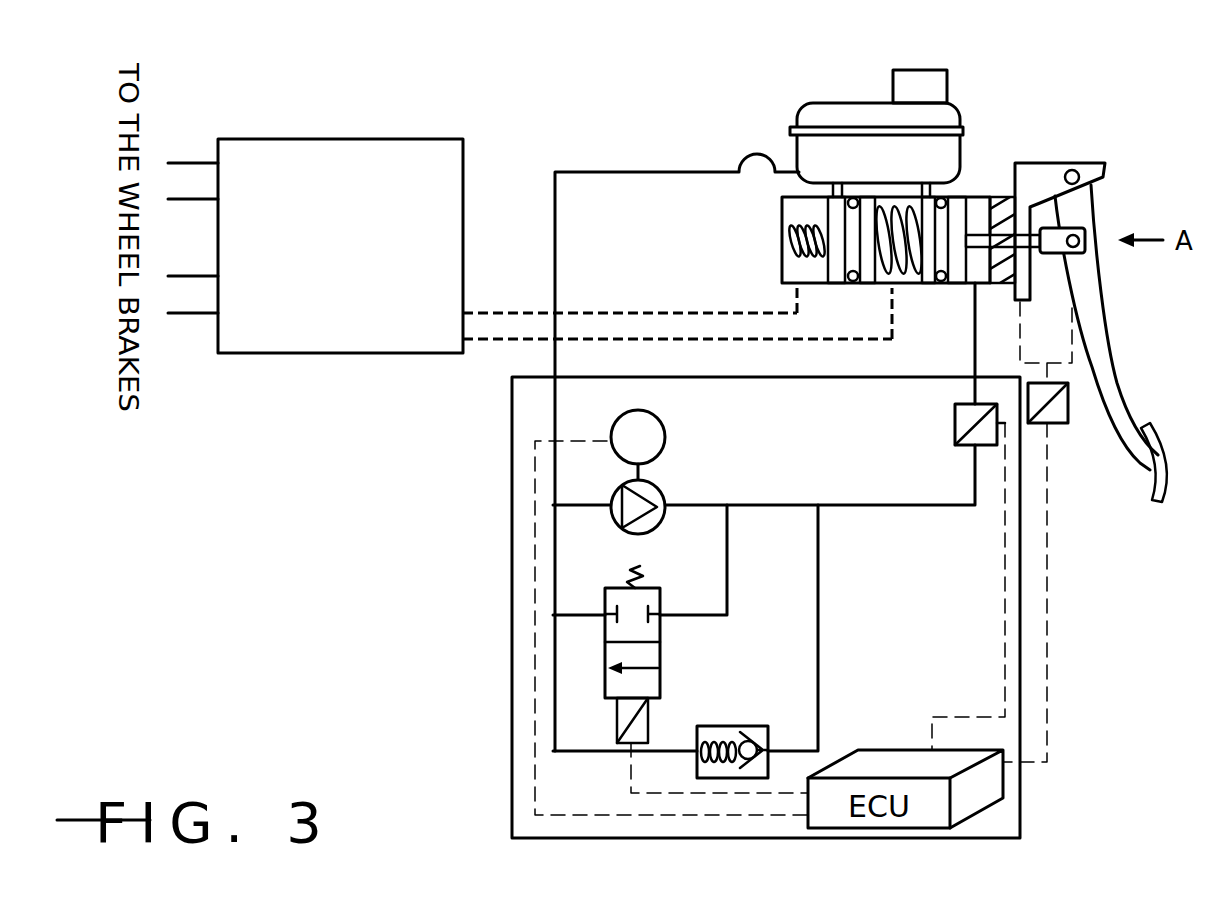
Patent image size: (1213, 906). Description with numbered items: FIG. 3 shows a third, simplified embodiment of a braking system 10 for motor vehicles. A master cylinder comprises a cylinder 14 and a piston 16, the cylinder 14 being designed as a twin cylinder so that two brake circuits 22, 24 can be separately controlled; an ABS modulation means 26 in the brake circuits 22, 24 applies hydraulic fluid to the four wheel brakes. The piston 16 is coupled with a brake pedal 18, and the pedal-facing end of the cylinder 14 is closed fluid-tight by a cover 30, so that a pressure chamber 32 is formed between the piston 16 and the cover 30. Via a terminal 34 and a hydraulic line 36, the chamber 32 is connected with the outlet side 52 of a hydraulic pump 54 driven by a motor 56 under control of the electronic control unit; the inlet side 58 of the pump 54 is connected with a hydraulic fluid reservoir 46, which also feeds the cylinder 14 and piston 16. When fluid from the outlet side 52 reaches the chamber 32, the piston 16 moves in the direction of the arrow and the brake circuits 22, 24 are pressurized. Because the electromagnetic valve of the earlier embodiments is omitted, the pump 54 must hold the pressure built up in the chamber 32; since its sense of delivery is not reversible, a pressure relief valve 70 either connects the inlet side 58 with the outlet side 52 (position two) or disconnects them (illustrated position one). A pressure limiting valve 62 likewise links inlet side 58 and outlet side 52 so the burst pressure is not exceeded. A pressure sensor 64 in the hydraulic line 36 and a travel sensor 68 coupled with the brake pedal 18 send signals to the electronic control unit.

The braking system 10 is at (1074, 594).
The cylinder 14 is at (820, 283).
The piston 16 is at (922, 245).
The brake pedal 18 is at (1095, 325).
The brake circuit 22 is at (480, 313).
The brake circuit 24 is at (480, 340).
The ABS modulation means 26 is at (462, 183).
The cover 30 is at (1012, 165).
The chamber 32 is at (993, 197).
The terminal 34 is at (975, 303).
The hydraulic line 36 is at (975, 358).
The hydraulic fluid reservoir 46 is at (857, 115).
The outlet side 52 is at (676, 503).
The hydraulic pump 54 is at (608, 512).
The motor 56 is at (656, 429).
The inlet side 58 is at (610, 506).
The pressure limiting valve 62 is at (774, 727).
The pressure sensor 64 is at (955, 424).
The travel sensor 68 is at (1067, 423).
The pressure relief valve 70 is at (662, 657).